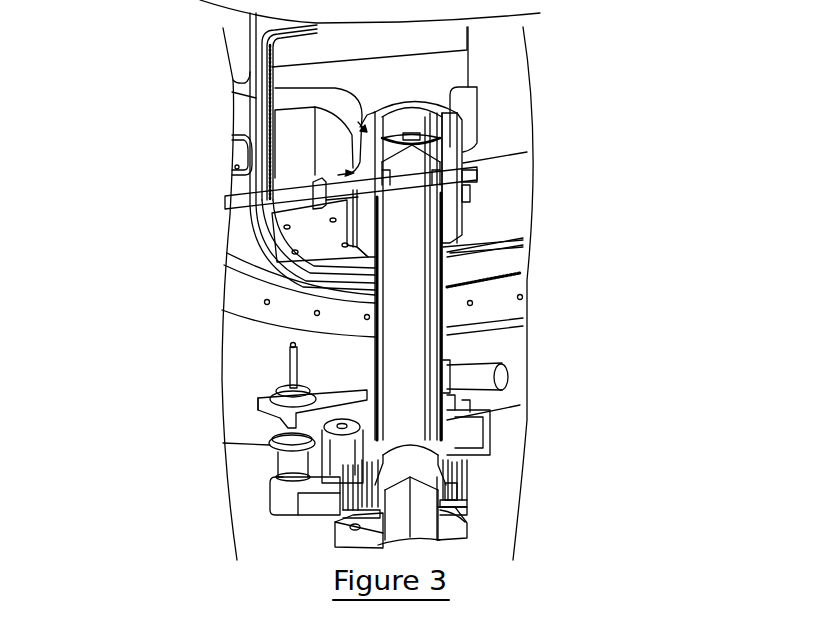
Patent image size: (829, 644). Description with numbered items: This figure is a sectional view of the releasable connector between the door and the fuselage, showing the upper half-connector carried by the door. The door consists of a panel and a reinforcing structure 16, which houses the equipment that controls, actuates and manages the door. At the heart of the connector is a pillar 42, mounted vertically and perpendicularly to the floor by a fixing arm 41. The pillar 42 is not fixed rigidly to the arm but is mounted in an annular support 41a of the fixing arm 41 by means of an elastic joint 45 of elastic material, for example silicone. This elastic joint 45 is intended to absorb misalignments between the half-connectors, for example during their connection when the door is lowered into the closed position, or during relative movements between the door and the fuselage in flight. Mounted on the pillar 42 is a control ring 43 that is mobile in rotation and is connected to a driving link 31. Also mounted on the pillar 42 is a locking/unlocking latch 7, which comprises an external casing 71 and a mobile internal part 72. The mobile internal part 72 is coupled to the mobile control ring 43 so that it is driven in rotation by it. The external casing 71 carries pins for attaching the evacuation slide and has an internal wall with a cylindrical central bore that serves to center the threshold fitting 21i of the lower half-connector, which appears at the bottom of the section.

The reinforcing structure 16 is at (262, 25).
The fixing arm 41 is at (452, 72).
The elastic joint 45 is at (290, 90).
The annular support 41a is at (272, 193).
The pillar 42 is at (372, 324).
The driving link 31 is at (477, 370).
The control ring 43 is at (493, 433).
The external casing 71 is at (470, 478).
The mobile internal part 72 is at (465, 512).
The locking/unlocking latch 7 is at (588, 448).
The threshold fitting 21i is at (340, 538).